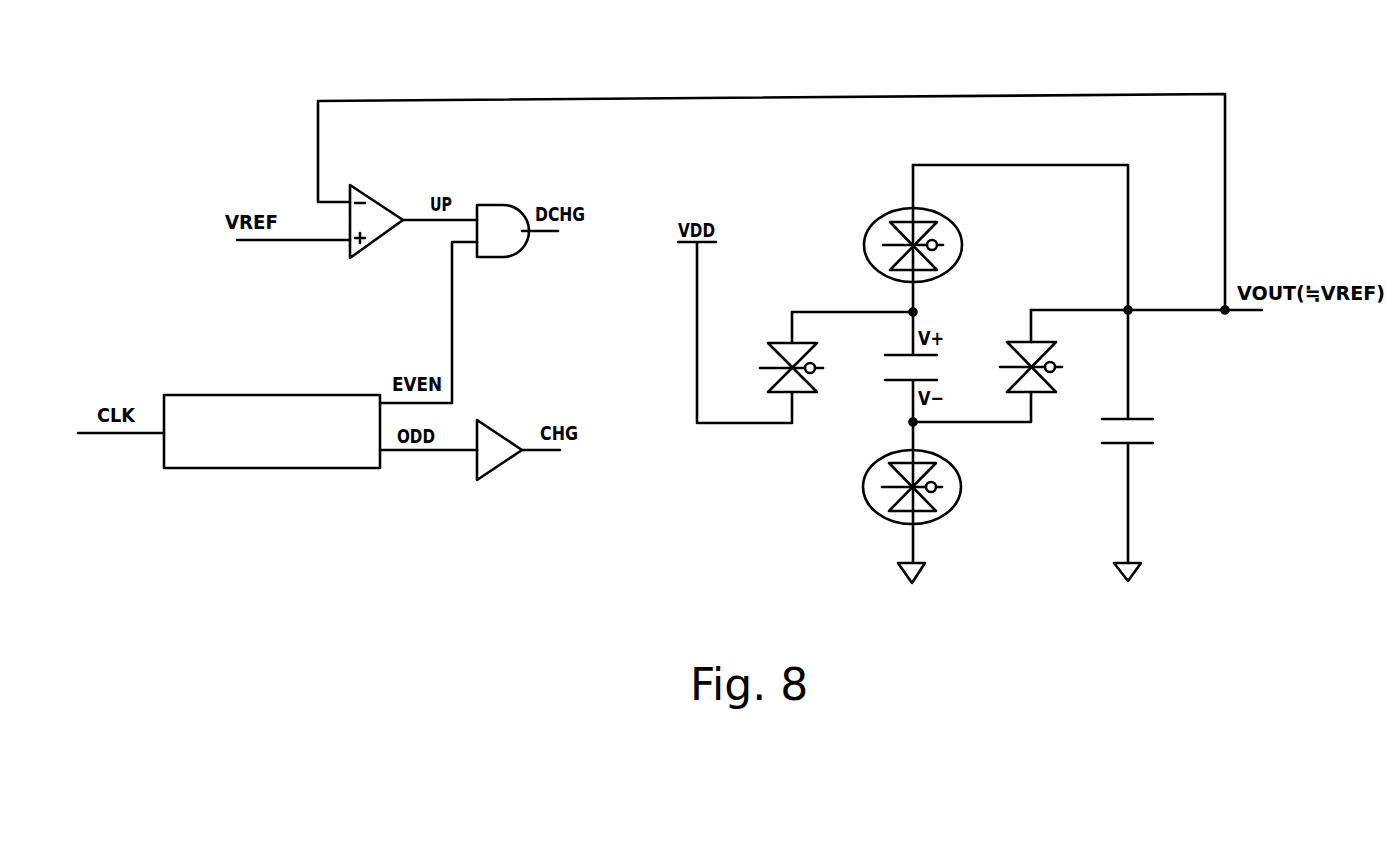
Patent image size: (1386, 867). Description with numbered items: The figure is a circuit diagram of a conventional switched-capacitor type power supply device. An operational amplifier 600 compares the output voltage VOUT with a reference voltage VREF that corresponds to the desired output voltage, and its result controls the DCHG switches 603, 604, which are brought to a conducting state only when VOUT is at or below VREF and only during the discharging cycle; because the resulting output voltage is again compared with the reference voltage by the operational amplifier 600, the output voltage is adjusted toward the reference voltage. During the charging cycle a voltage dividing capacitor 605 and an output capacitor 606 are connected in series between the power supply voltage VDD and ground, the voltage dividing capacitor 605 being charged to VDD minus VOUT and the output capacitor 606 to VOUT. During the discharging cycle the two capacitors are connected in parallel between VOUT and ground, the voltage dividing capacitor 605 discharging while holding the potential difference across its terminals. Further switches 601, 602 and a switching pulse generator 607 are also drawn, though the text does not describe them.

The operational amplifier 600 is at (361, 185).
The first switch 601 is at (775, 335).
The second switch 602 is at (1013, 340).
The DCHG switch 603 is at (902, 210).
The DCHG switch 604 is at (866, 510).
The voltage dividing capacitor 605 is at (882, 373).
The output capacitor 606 is at (1156, 432).
The switching pulse generator 607 is at (252, 468).